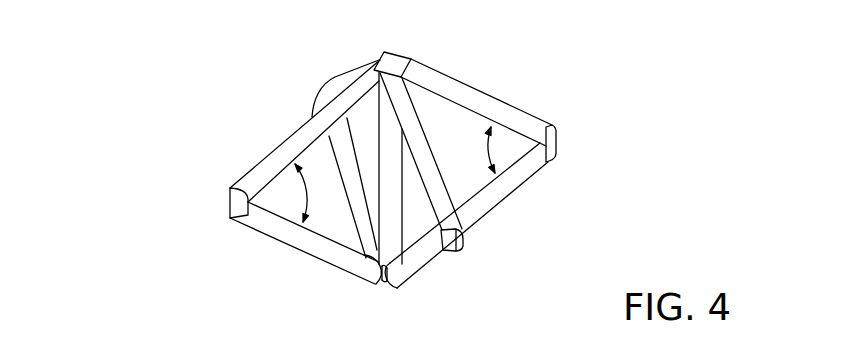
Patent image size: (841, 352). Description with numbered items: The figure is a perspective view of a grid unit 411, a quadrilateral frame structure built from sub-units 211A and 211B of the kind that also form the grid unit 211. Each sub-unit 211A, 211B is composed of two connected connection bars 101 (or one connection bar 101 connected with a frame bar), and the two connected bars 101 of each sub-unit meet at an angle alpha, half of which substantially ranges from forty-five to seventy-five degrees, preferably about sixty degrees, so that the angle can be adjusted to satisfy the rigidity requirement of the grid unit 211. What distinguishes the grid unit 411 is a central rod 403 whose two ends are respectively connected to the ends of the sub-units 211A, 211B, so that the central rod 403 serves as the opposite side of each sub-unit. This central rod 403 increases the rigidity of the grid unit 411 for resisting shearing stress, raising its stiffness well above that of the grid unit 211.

The grid unit 411 is at (70, 44).
The connection bar 101 is at (263, 170).
The grid unit 211 is at (462, 74).
The sub-unit 211A is at (204, 143).
The sub-unit 211B is at (580, 95).
The central rod 403 is at (366, 264).